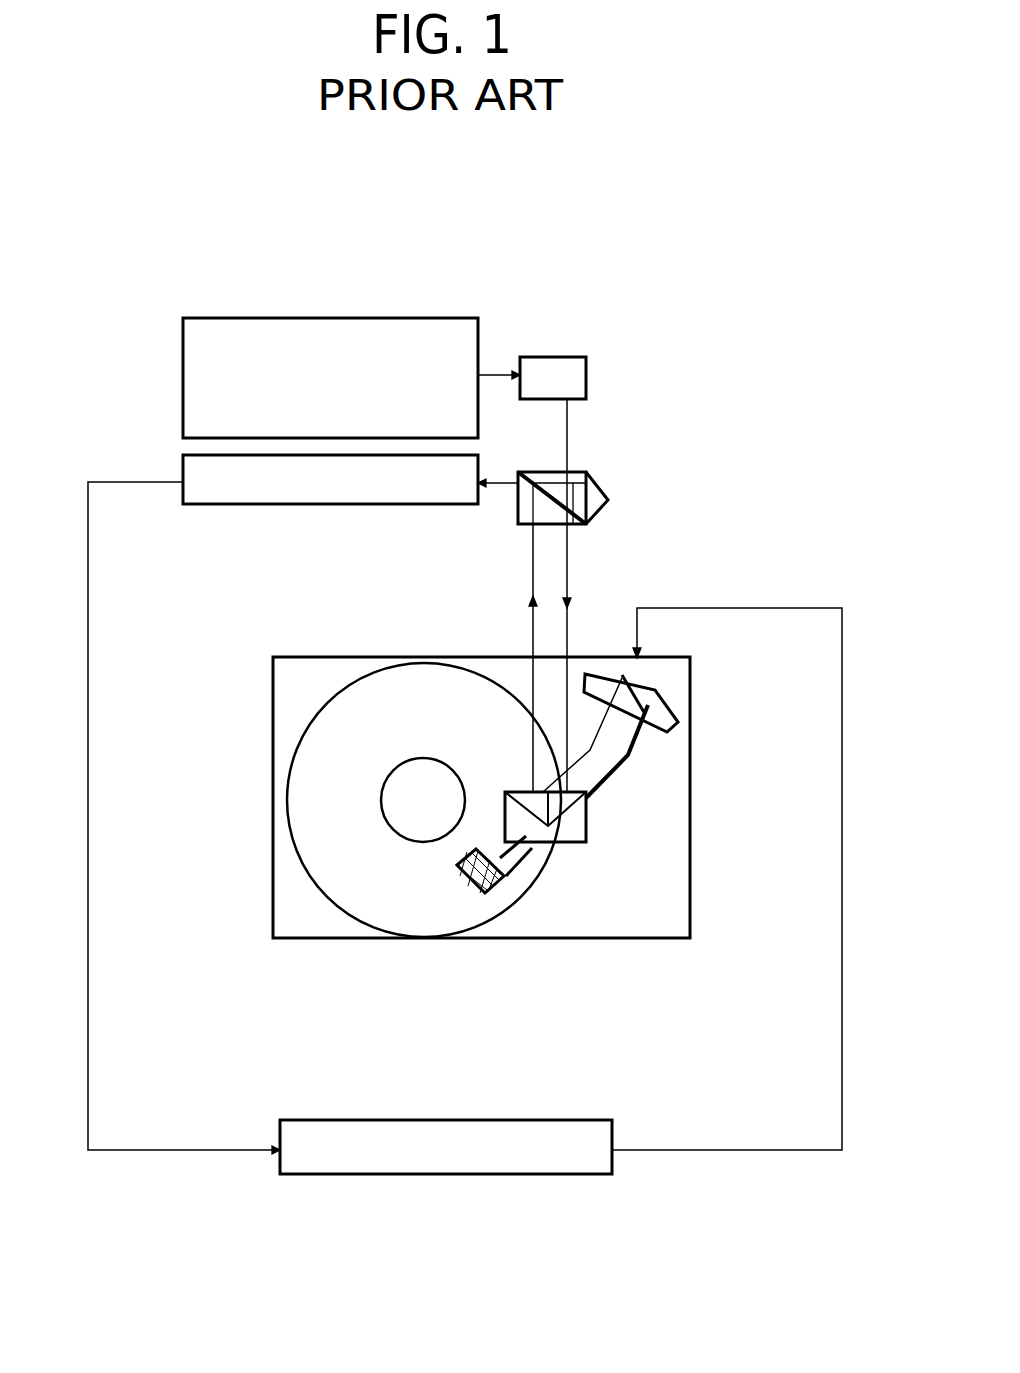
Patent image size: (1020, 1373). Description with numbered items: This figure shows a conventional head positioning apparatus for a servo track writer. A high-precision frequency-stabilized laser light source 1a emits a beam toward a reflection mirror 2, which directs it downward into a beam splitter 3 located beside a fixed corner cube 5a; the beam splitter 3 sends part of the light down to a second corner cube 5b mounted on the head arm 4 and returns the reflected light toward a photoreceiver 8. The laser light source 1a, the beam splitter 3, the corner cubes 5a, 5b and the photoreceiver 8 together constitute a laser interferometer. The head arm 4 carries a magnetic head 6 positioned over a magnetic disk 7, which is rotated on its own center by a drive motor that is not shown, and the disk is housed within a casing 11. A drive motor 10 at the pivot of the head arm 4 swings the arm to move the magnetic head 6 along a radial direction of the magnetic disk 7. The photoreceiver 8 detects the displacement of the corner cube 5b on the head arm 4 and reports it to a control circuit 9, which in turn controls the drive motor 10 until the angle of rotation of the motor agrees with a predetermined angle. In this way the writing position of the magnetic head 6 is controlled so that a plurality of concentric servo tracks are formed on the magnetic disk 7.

The laser light source 1a is at (410, 318).
The reflection mirror 2 is at (586, 383).
The beam splitter 3 is at (574, 478).
The head arm 4 is at (633, 752).
The corner cube 5a is at (610, 500).
The corner cube 5b is at (575, 826).
The magnetic head 6 is at (482, 893).
The magnetic disk 7 is at (312, 758).
The photoreceiver 8 is at (228, 504).
The control circuit 9 is at (583, 1174).
The drive motor 10 is at (655, 690).
The casing 11 is at (668, 908).